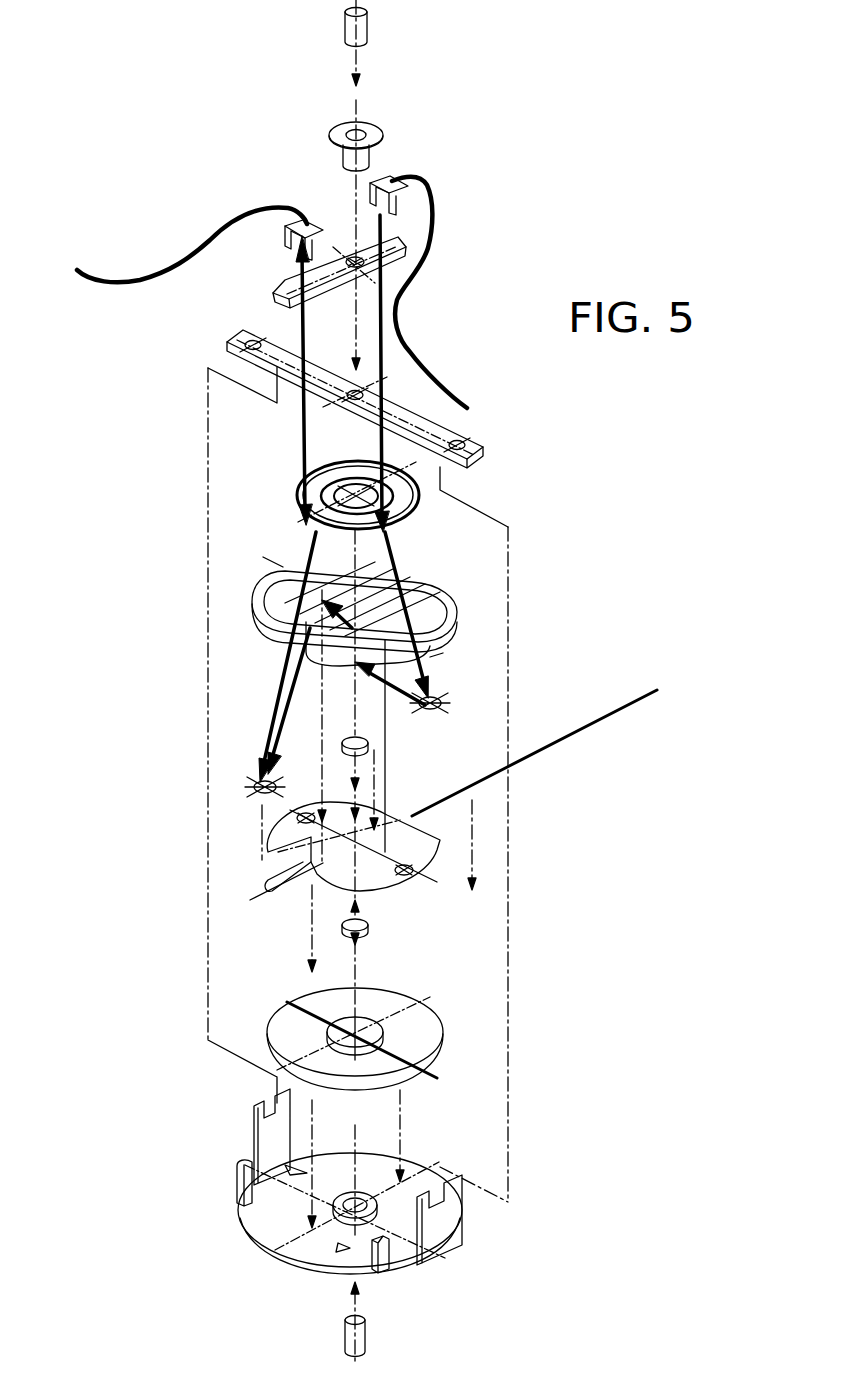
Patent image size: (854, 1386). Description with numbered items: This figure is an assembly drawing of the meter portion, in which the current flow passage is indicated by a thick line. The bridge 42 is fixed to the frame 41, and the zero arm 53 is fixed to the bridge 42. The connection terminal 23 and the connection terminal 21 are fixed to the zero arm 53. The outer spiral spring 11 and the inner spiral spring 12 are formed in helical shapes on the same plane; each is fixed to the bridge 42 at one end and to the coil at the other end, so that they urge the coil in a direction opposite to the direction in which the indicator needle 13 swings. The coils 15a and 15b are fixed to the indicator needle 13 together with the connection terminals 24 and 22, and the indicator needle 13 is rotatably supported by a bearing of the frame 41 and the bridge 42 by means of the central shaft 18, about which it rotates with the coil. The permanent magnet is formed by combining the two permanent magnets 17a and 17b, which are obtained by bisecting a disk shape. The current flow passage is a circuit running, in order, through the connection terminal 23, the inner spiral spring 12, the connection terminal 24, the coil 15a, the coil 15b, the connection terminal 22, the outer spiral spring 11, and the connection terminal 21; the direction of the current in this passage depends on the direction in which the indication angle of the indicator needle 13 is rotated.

The outer spiral spring 11 is at (410, 507).
The inner spiral spring 12 is at (297, 495).
The indicator needle 13 is at (438, 849).
The coil 15a is at (457, 612).
The coil 15b is at (255, 600).
The permanent magnet 17a is at (443, 1032).
The permanent magnet 17b is at (268, 1042).
The central shaft 18 is at (368, 745).
The connection terminal 21 is at (303, 214).
The connection terminal 22 is at (252, 784).
The connection terminal 23 is at (398, 176).
The connection terminal 24 is at (445, 702).
The frame 41 is at (250, 1228).
The bridge 42 is at (227, 340).
The zero arm 53 is at (406, 260).